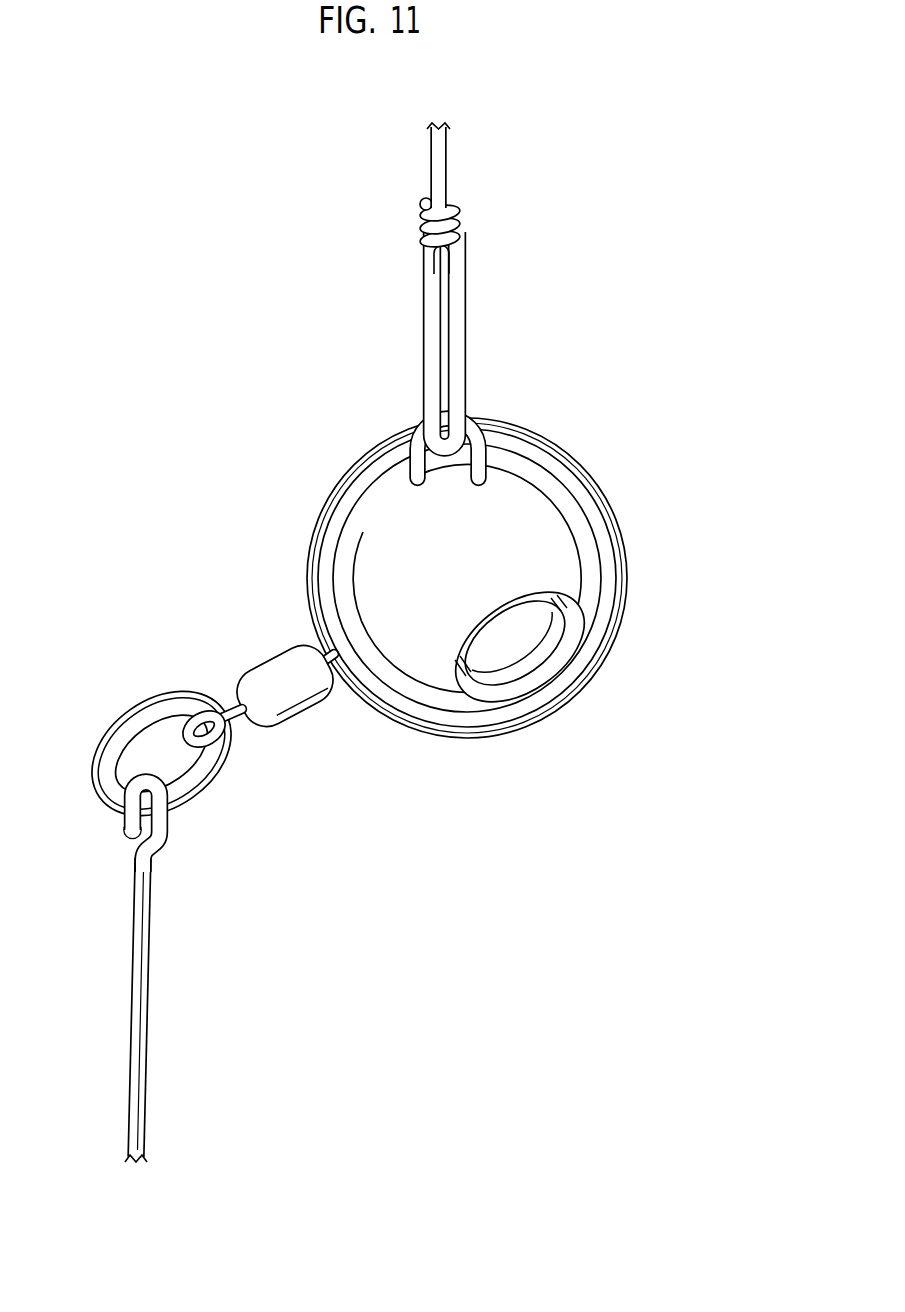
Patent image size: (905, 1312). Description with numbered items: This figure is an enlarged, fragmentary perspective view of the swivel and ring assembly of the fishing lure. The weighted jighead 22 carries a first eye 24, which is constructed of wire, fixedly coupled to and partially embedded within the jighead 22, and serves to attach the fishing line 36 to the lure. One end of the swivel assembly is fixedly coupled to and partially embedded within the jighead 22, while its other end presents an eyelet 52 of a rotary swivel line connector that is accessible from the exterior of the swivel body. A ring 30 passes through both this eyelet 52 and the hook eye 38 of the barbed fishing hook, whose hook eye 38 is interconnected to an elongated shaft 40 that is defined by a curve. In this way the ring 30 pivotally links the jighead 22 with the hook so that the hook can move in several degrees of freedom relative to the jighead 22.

The jighead 22 is at (362, 552).
The first eye 24 is at (422, 428).
The fishing line 36 is at (466, 338).
The ring 30 is at (205, 782).
The eyelet 52 is at (228, 743).
The elongated shaft 40 is at (128, 1003).
The hook eye 38 is at (167, 820).